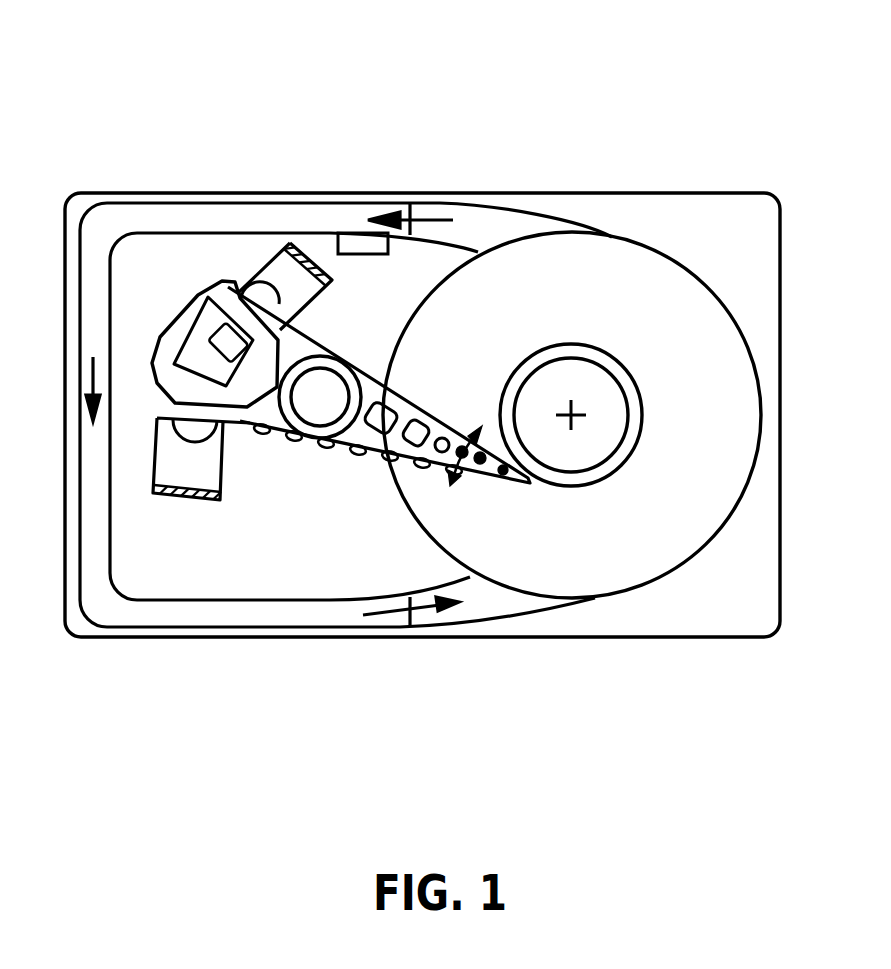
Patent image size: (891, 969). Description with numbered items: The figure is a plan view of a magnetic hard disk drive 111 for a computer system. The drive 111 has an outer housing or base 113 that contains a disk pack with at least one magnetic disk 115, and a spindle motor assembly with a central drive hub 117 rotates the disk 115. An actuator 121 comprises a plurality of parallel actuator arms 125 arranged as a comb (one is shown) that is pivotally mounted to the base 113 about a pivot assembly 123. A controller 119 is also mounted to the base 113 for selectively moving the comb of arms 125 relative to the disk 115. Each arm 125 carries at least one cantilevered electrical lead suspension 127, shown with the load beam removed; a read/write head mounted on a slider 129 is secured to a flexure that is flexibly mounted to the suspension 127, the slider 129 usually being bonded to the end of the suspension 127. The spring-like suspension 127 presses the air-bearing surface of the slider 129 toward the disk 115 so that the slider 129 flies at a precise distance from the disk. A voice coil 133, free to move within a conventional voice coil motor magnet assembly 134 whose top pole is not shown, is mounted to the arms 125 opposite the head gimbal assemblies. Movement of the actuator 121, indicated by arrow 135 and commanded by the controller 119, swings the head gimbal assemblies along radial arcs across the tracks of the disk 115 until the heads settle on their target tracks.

The magnetic hard disk drive 111 is at (888, 45).
The base 113 is at (640, 193).
The magnetic disk 115 is at (682, 264).
The central drive hub 117 is at (604, 356).
The controller 119 is at (371, 255).
The actuator 121 is at (336, 410).
The pivot assembly 123 is at (305, 430).
The actuator arm 125 is at (380, 385).
The electrical lead suspension 127 is at (428, 406).
The slider 129 is at (498, 478).
The voice coil 133 is at (180, 307).
The voice coil motor magnet assembly 134 is at (273, 272).
The arrow 135 is at (442, 478).